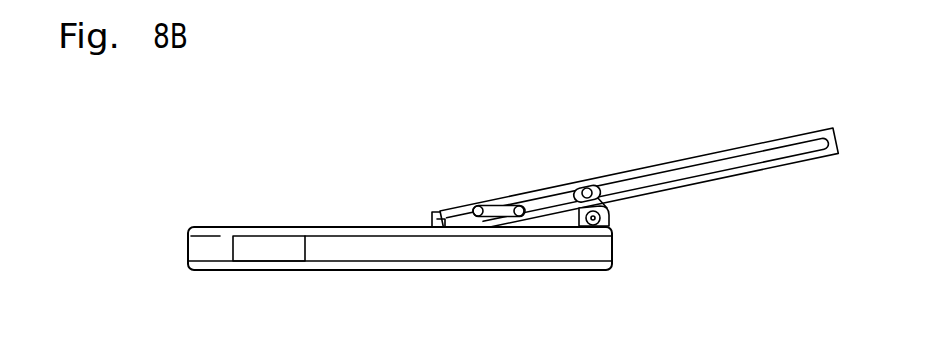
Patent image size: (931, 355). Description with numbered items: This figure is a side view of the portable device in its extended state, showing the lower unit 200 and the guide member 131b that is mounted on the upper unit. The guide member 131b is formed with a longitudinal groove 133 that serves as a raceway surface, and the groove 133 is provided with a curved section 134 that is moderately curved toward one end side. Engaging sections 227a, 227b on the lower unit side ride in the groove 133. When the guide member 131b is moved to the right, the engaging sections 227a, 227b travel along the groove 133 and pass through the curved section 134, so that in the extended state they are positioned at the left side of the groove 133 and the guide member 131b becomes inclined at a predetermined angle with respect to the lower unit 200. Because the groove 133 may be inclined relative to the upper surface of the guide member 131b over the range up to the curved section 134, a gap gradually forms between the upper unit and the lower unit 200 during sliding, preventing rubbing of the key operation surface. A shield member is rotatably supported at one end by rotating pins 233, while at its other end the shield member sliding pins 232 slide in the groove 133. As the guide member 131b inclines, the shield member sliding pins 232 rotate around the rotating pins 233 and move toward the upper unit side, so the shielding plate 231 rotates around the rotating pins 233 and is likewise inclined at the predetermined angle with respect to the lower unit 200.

The guide member 131b is at (829, 153).
The groove 133 is at (760, 153).
The curved section 134 is at (525, 200).
The lower unit 200 is at (177, 227).
The engaging section 227a is at (476, 218).
The engaging section 227b is at (517, 217).
The shielding plate 231 is at (612, 215).
The shield member sliding pin 232 is at (587, 188).
The rotating pin 233 is at (603, 223).